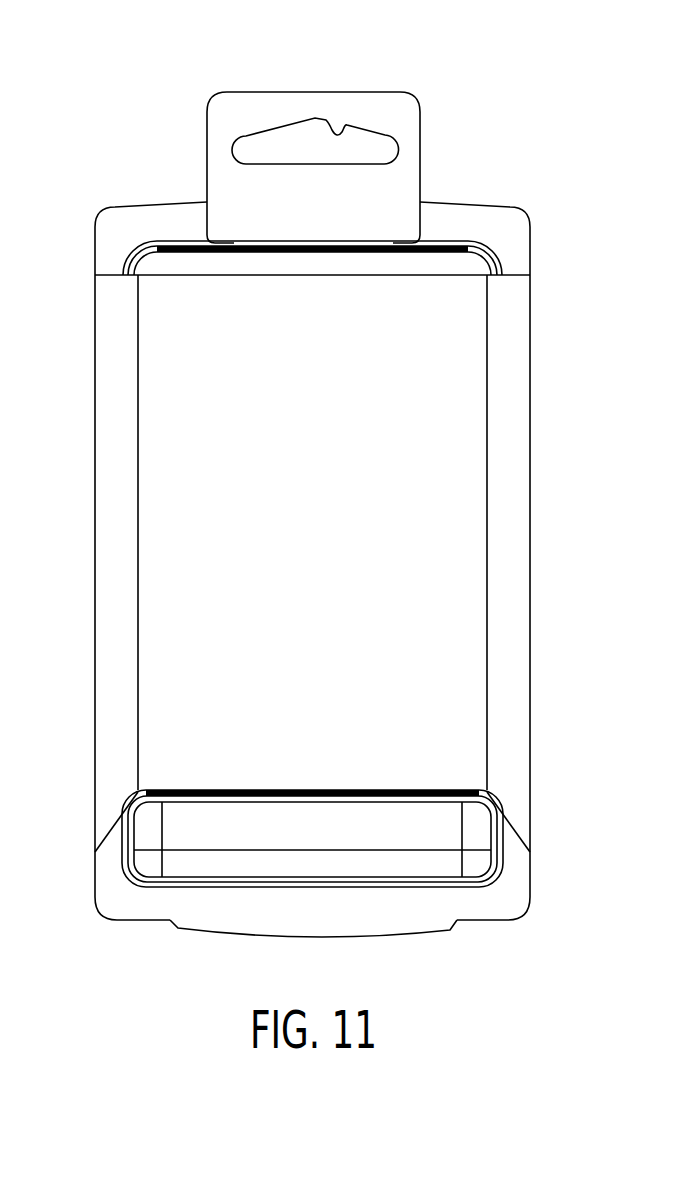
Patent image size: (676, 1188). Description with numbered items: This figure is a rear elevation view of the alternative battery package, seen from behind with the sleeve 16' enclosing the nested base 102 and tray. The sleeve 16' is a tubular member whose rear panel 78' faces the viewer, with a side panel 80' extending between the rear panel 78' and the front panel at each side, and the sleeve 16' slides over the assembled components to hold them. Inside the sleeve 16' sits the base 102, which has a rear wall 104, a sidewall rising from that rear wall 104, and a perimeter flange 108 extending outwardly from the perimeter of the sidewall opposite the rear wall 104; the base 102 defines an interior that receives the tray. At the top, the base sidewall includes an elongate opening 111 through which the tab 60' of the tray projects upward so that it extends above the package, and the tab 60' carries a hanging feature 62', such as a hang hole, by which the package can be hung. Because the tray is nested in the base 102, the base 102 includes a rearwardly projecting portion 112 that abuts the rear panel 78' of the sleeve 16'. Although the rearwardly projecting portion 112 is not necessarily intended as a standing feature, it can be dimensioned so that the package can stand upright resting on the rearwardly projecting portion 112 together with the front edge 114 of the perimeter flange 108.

The tab 60' is at (313, 130).
The hanging feature 62' is at (315, 108).
The perimeter flange 108 is at (115, 233).
The base 102 is at (500, 233).
The elongate opening 111 is at (431, 243).
The sleeve 16' is at (106, 597).
The side panel 80' is at (517, 597).
The rear panel 78' is at (336, 469).
The rear wall 104 is at (135, 798).
The rearwardly projecting portion 112 is at (440, 833).
The front edge 114 is at (427, 933).